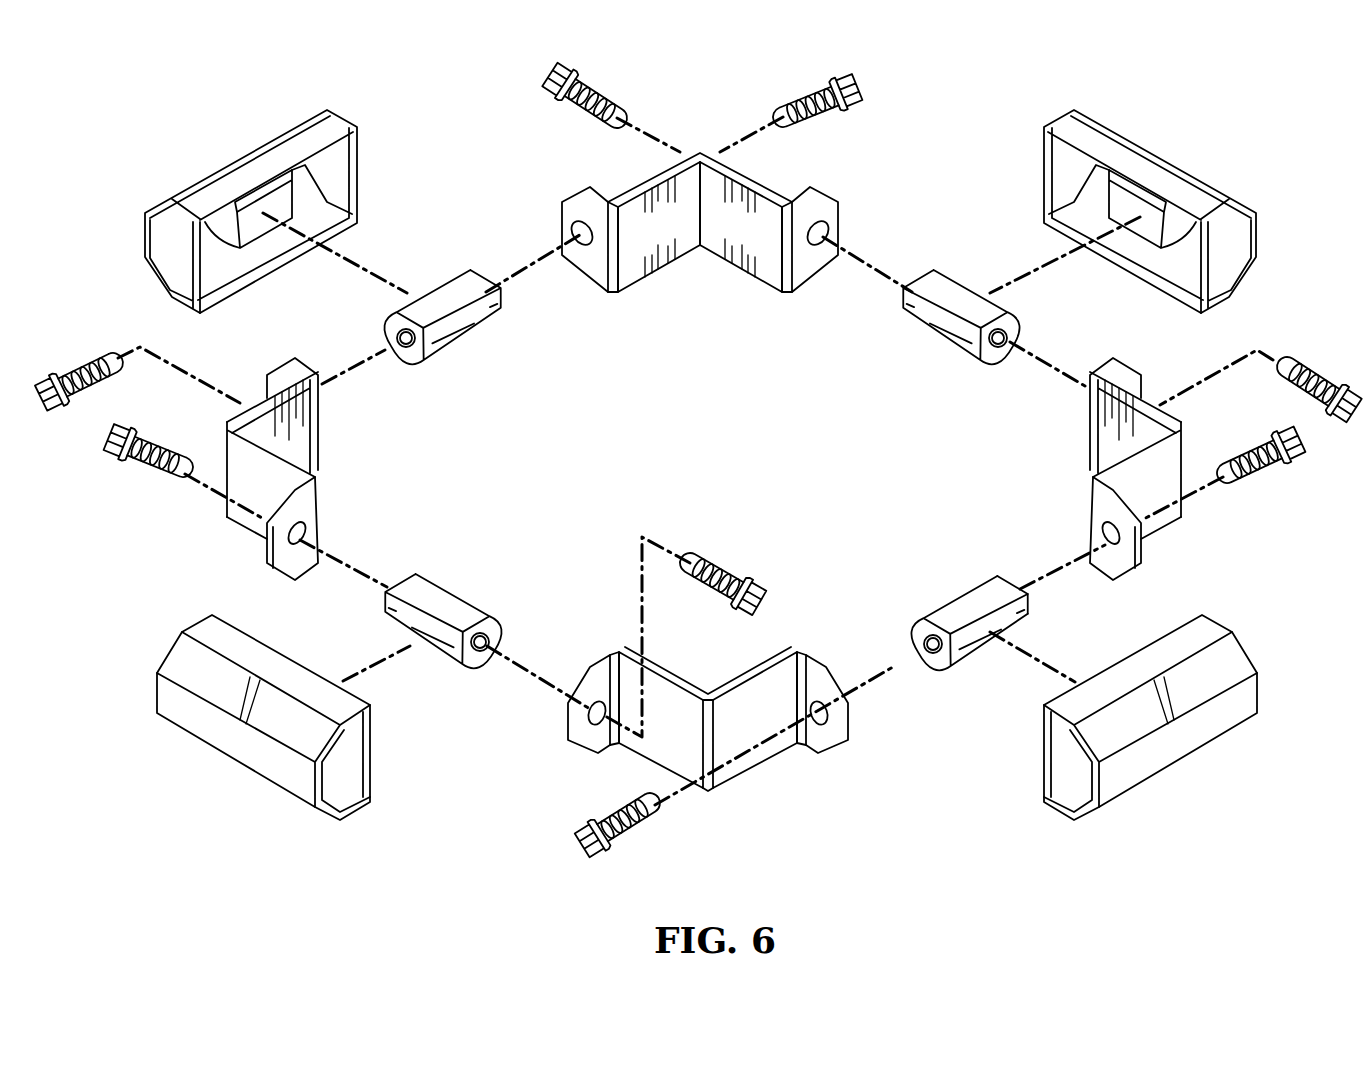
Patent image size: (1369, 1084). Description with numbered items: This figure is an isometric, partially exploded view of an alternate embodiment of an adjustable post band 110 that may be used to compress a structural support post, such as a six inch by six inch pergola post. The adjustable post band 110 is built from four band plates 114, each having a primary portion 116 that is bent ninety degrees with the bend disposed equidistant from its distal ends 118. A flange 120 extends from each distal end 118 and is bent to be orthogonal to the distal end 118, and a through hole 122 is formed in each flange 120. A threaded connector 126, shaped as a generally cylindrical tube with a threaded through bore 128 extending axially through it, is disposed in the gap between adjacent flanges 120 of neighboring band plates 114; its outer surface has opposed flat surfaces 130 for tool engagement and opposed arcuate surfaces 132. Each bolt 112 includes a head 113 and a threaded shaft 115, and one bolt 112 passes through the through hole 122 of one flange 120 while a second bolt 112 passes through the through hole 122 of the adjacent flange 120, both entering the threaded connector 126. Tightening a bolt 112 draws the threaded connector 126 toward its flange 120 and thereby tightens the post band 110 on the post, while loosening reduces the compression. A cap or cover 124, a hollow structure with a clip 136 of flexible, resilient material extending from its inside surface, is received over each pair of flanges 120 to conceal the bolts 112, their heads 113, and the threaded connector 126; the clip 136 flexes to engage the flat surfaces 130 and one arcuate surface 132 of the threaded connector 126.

The adjustable post band 110 is at (447, 98).
The bolt 112 is at (701, 502).
The head 113 is at (583, 846).
The band plate 114 is at (702, 297).
The threaded shaft 115 is at (638, 832).
The primary portion 116 is at (636, 268).
The distal end 118 is at (603, 622).
The flange 120 is at (822, 198).
The through hole 122 is at (578, 232).
The cap or cover 124 is at (734, 457).
The threaded connector 126 is at (742, 501).
The threaded through bore 128 is at (1002, 342).
The flat surface 130 is at (1006, 607).
The arcuate surface 132 is at (1016, 592).
The clip 136 is at (212, 228).